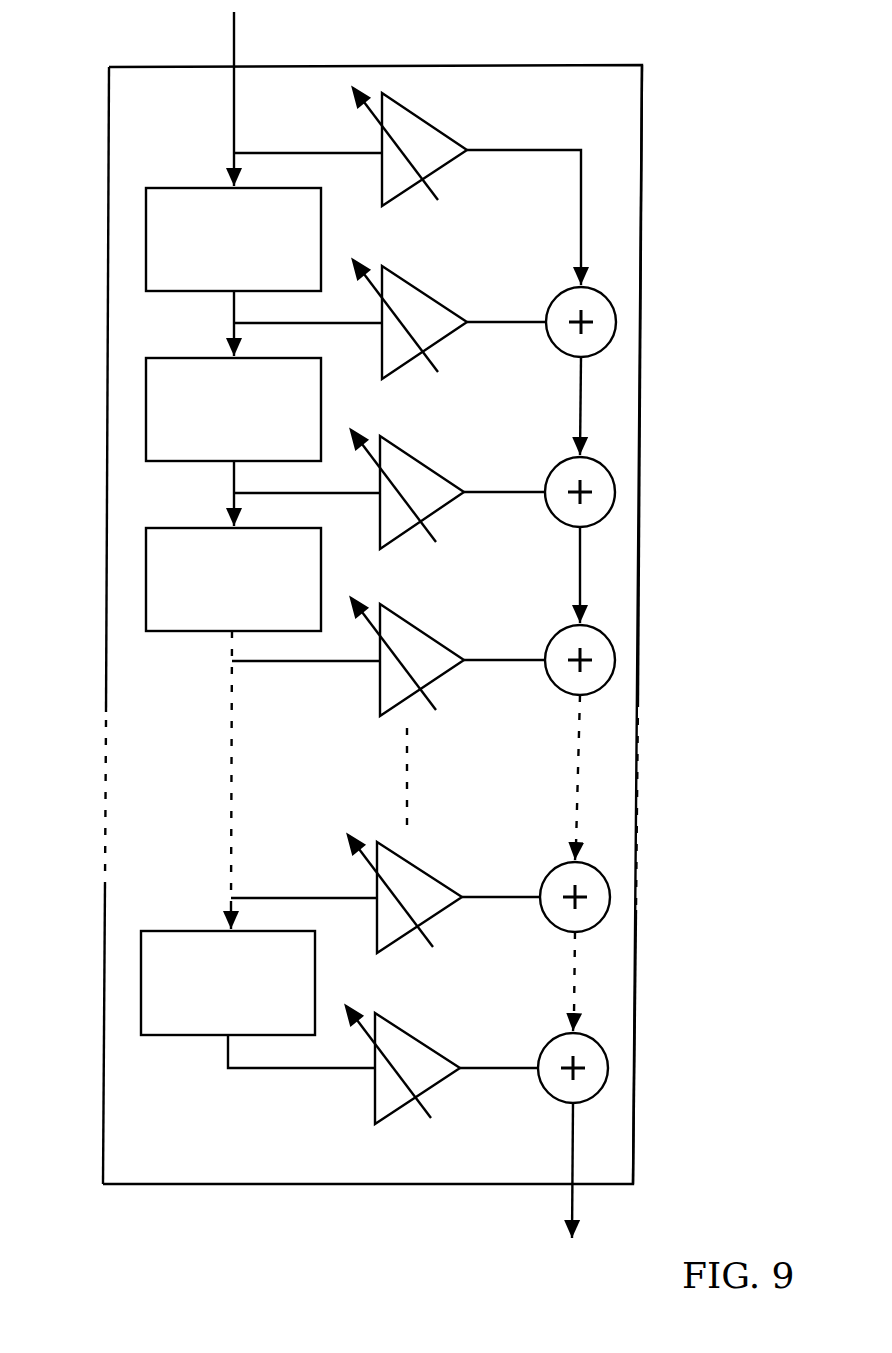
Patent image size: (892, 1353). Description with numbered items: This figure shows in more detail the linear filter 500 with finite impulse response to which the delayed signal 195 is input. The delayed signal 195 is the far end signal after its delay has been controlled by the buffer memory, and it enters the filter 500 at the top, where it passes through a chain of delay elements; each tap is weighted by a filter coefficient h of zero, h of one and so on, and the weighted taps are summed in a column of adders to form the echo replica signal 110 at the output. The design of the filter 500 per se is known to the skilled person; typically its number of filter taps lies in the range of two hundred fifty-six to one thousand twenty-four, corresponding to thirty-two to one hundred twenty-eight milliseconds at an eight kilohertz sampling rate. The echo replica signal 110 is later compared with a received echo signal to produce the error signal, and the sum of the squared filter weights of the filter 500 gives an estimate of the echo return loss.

The delayed signal 195 is at (234, 32).
The filter 500 is at (642, 206).
The echo replica signal 110 is at (574, 1204).